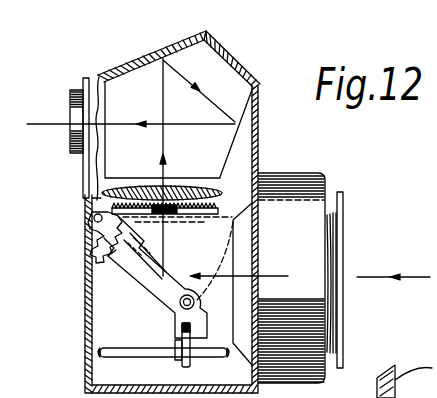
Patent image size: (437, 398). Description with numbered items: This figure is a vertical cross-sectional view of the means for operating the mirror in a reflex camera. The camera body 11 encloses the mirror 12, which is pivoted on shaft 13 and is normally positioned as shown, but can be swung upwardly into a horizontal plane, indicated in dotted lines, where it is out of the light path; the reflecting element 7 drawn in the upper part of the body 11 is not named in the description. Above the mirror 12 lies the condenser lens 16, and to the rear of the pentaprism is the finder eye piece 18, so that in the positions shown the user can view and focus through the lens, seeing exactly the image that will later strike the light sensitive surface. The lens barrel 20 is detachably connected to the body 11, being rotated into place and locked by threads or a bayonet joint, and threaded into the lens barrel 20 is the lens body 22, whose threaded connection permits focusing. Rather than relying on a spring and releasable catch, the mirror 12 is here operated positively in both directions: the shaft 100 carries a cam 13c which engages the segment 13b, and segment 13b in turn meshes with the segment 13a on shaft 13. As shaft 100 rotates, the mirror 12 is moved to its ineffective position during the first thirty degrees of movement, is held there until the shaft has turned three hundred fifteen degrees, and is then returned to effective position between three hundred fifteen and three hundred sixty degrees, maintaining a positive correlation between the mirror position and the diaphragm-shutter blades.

The camera body 11 is at (258, 81).
The mirror 7 is at (224, 160).
The finder eye piece 18 is at (77, 110).
The condenser lens 16 is at (210, 189).
The mirror 12 is at (170, 222).
The shaft 13 is at (90, 213).
The segment 13a is at (93, 226).
The segment 13b is at (110, 257).
The cam 13c is at (190, 358).
The shaft 100 is at (157, 350).
The lens barrel 20 is at (312, 173).
The lens body 22 is at (343, 193).